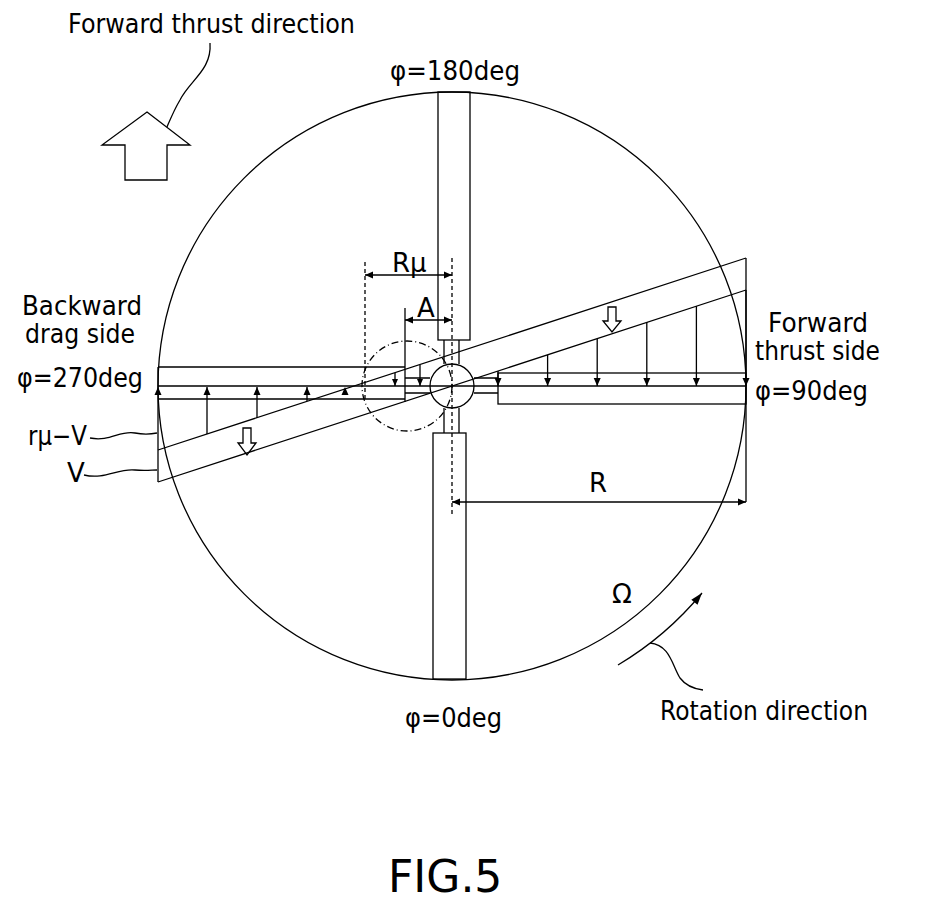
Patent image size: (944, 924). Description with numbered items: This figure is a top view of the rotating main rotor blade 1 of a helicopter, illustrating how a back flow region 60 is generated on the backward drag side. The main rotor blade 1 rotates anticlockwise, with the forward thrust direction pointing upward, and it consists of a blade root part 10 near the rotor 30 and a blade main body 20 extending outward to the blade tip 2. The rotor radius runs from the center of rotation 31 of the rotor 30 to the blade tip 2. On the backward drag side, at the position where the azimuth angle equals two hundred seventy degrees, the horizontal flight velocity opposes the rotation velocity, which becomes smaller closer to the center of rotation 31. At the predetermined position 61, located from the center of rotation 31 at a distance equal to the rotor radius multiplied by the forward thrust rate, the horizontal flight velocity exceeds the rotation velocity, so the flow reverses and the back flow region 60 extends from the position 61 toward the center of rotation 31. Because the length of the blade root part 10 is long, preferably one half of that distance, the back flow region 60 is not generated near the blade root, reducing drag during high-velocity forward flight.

The main rotor blade 1 is at (415, 582).
The blade tip 2 is at (158, 387).
The blade root part 10 is at (443, 423).
The blade main body 20 is at (467, 572).
The rotor 30 is at (473, 410).
The center of rotation 31 is at (480, 372).
The back flow region 60 is at (383, 425).
The predetermined position 61 is at (365, 369).